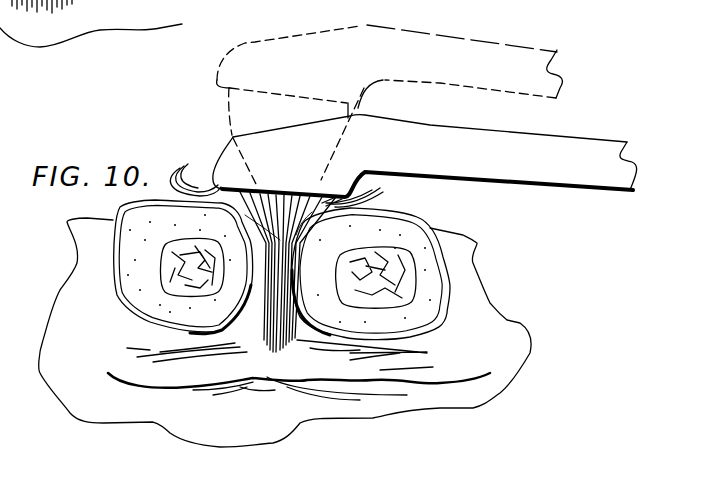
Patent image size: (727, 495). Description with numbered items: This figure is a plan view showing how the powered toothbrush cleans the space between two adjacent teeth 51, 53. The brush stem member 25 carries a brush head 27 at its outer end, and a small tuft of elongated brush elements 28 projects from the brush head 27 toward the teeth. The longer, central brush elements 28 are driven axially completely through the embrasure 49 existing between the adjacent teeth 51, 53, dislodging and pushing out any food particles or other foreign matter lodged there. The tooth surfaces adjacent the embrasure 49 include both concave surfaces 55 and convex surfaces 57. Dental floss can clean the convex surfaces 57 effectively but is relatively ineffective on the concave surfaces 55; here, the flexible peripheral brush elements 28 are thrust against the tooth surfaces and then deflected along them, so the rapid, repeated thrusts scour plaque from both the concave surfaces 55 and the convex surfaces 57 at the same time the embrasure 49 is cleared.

The brush stem member 25 is at (533, 170).
The brush head 27 is at (232, 148).
The brush elements 28 is at (180, 168).
The embrasure 49 is at (285, 255).
The tooth 51 is at (140, 322).
The tooth 53 is at (427, 340).
The concave surfaces 55 is at (280, 275).
The convex surfaces 57 is at (277, 236).